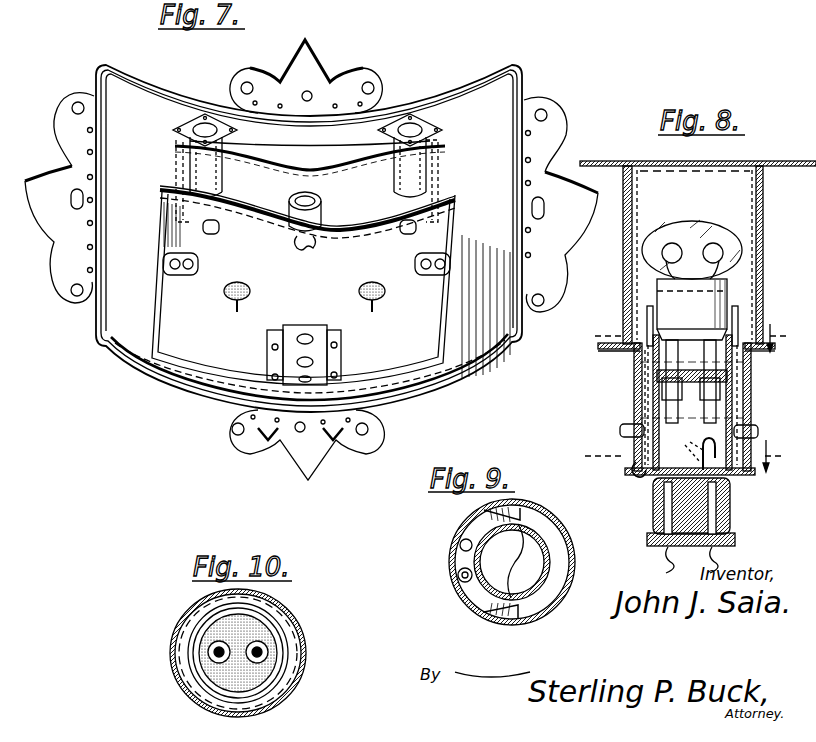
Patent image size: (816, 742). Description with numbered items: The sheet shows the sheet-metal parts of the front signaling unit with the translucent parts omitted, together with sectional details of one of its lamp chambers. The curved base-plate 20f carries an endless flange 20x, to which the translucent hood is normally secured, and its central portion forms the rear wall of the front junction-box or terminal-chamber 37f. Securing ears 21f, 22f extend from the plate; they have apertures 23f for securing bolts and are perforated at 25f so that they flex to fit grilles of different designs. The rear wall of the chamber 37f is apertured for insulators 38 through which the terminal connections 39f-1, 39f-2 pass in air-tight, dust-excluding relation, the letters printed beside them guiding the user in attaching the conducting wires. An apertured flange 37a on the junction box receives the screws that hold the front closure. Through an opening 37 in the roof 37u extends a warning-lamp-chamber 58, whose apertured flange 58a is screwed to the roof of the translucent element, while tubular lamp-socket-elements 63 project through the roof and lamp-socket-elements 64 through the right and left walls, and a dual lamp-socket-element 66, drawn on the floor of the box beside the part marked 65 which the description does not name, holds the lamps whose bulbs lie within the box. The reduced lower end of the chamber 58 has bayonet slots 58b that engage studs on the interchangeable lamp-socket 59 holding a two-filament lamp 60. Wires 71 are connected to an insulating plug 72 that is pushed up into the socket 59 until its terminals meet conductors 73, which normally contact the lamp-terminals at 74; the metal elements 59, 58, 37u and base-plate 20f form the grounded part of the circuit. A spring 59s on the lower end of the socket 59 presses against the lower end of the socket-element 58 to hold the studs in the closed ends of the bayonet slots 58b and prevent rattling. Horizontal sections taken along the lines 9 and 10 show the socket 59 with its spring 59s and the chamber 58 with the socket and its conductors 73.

In FIG. 7, the base-plate 20f is at (309, 235).
In FIG. 7, the endless flange 20x is at (520, 104).
In FIG. 7, the securing ear 21f is at (72, 148).
In FIG. 7, the securing ear 22f is at (307, 62).
In FIG. 7, the apertures 23f is at (76, 209).
In FIG. 7, the perforations 25f is at (92, 131).
In FIG. 8, the opening 37 is at (634, 355).
In FIG. 7, the apertured flange 37a is at (183, 208).
In FIG. 7, the front junction-box or terminal-chamber 37f is at (172, 179).
In FIG. 7, the upper wall or roof 37u is at (288, 172).
In FIG. 8, the upper wall or roof 37u is at (600, 346).
In FIG. 7, the apertured insulators 38 is at (360, 300).
In FIG. 7, the terminal connection 39f-1 is at (240, 305).
In FIG. 7, the terminal connection 39f-2 is at (375, 305).
In FIG. 7, the warning-lamp-chamber 58 is at (282, 150).
In FIG. 8, the warning-lamp-chamber 58 is at (760, 186).
In FIG. 10, the warning-lamp-chamber 58 is at (285, 614).
In FIG. 8, the apertured flange 58a is at (612, 160).
In FIG. 7, the bayonet slots 58b is at (213, 233).
In FIG. 8, the bayonet slots 58b is at (762, 428).
In FIG. 8, the lamp-socket 59 is at (653, 400).
In FIG. 9, the lamp-socket 59 is at (550, 558).
In FIG. 10, the lamp-socket 59 is at (270, 640).
In FIG. 8, the spring 59s is at (615, 488).
In FIG. 9, the spring 59s is at (518, 555).
In FIG. 8, the two-filament lamp 60 is at (727, 282).
In FIG. 7, the tubular lamp-socket-element 63 is at (318, 197).
In FIG. 7, the lamp-socket-element 64 is at (199, 262).
In FIG. 7, the terminal block holes 65 is at (313, 362).
In FIG. 7, the dual lamp-socket-element 66 is at (272, 356).
In FIG. 8, the wires 71 is at (656, 560).
In FIG. 8, the insulating plug 72 is at (730, 508).
In FIG. 8, the conductors 73 is at (704, 412).
In FIG. 10, the conductors 73 is at (262, 650).
In FIG. 8, the lamp-terminals 74 is at (650, 334).
In FIG. 8, the section line 9— 9 is at (686, 456).
In FIG. 8, the section line 10— 10 is at (690, 338).